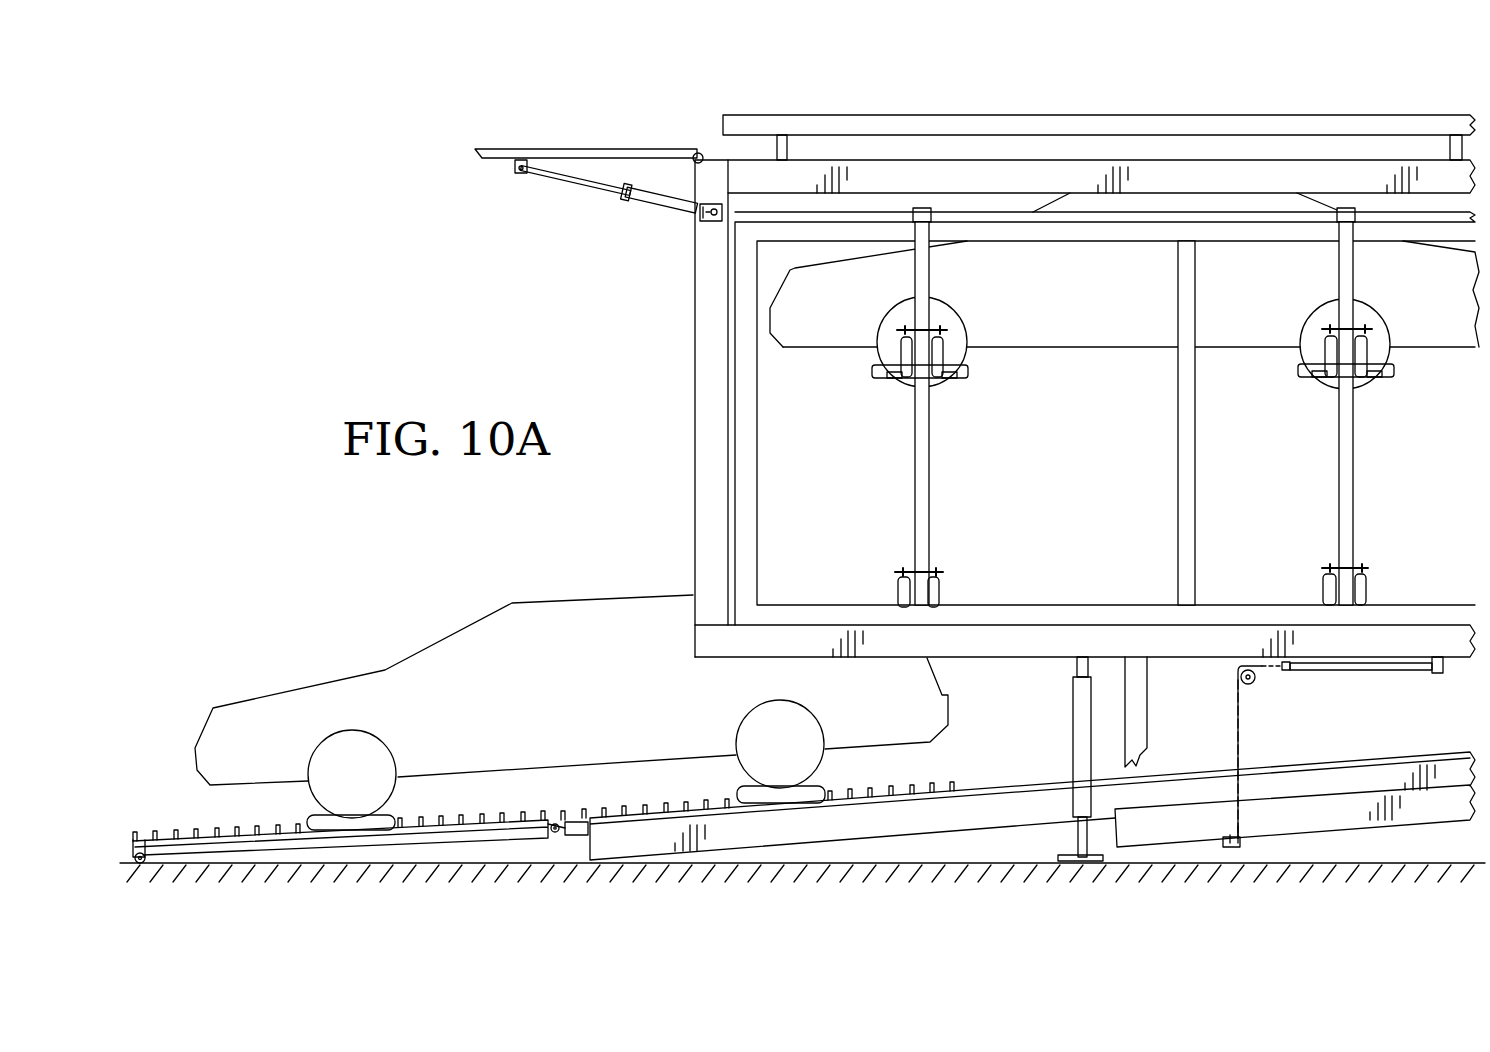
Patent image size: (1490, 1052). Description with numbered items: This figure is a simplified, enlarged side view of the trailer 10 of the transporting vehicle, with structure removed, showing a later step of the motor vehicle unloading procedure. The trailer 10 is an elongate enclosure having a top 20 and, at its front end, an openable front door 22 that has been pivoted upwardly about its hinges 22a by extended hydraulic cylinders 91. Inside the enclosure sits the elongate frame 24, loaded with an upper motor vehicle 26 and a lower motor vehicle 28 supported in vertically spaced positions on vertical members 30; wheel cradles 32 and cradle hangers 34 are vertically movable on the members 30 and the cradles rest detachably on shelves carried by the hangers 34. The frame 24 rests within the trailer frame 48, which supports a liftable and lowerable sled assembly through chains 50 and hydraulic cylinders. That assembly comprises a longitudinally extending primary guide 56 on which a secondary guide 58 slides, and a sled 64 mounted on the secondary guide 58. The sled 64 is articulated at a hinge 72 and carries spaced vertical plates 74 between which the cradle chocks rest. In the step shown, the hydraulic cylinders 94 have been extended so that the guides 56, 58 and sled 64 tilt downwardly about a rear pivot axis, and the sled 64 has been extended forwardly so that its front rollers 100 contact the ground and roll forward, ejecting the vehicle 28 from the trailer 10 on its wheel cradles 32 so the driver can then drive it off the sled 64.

The trailer 10 is at (1302, 88).
The top 20 is at (1080, 114).
The front door 22 is at (557, 147).
The hinges 22a is at (698, 152).
The frame 24 is at (758, 413).
The motor vehicle 26 is at (1145, 330).
The motor vehicle 28 is at (473, 637).
The vertical members 30 is at (913, 440).
The wheel cradles 32 is at (353, 822).
The cradle hangers 34 is at (942, 588).
The trailer frame 48 is at (717, 160).
The chains 50 is at (1240, 730).
The primary guide 56 is at (1380, 807).
The secondary guide 58 is at (1013, 802).
The sled 64 is at (248, 832).
The hinge 72 is at (555, 822).
The vertical plates 74 is at (530, 820).
The hydraulic cylinders 91 is at (670, 212).
The hydraulic cylinders 94 is at (1445, 673).
The front rollers 100 is at (142, 852).